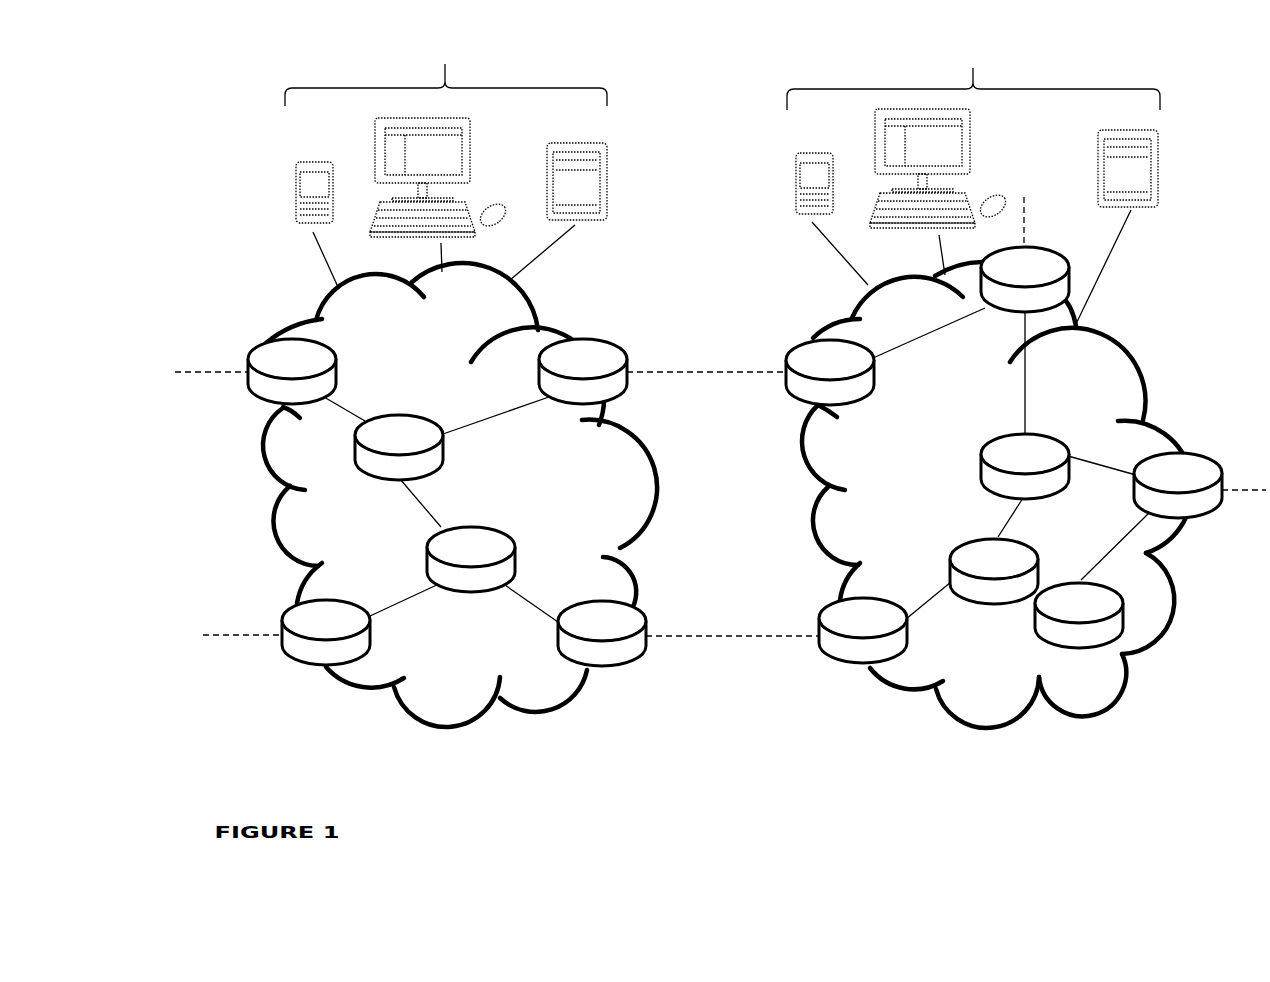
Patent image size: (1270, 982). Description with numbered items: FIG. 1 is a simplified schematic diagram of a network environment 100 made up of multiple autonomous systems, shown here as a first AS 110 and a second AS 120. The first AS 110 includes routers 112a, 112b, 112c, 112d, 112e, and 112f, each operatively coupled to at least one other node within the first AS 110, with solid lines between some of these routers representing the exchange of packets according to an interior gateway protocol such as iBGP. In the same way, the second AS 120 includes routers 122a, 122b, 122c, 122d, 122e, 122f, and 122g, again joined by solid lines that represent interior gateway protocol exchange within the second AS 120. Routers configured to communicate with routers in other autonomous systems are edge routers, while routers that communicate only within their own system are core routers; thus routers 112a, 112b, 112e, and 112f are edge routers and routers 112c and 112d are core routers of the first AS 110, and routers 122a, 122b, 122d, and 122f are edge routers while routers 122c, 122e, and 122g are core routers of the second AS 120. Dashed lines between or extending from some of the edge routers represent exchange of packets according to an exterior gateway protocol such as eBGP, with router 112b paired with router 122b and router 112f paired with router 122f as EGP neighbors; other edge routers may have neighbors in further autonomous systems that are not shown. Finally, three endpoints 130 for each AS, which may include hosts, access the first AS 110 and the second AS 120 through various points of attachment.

The network environment 100 is at (720, 408).
The first AS 110 is at (460, 495).
The second AS 120 is at (997, 495).
The endpoints 130 is at (722, 137).
The router 112a is at (292, 371).
The router 112b is at (583, 371).
The router 112c is at (399, 447).
The router 112d is at (471, 559).
The router 112e is at (326, 632).
The router 112f is at (602, 633).
The router 122a is at (1025, 279).
The router 122b is at (830, 372).
The router 122c is at (1025, 466).
The router 122d is at (1178, 485).
The router 122e is at (994, 571).
The router 122f is at (863, 630).
The router 122g is at (1079, 615).